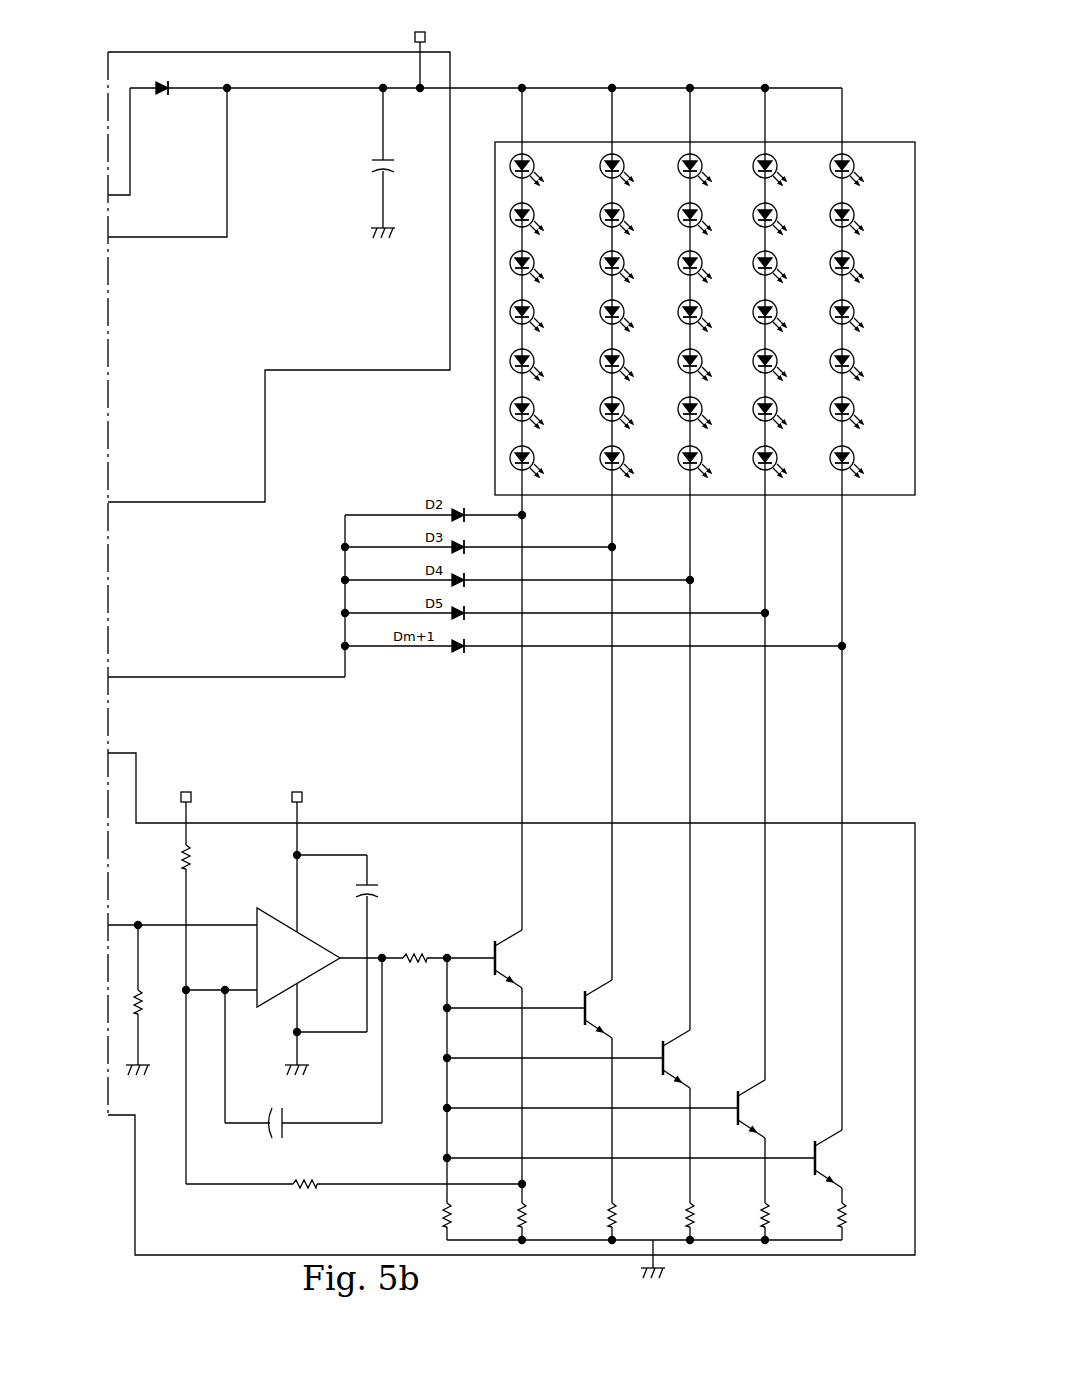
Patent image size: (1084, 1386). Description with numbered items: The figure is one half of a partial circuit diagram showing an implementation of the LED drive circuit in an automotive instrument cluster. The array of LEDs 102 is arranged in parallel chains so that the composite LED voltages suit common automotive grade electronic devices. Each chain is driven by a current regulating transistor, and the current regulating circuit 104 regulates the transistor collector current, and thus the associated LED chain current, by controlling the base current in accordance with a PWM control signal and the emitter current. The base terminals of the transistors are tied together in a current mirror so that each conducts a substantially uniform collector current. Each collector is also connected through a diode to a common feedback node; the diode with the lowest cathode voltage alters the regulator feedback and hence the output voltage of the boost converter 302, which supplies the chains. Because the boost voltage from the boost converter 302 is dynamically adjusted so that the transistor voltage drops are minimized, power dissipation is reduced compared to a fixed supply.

The boost converter 302 is at (300, 372).
The array of LEDs 102 is at (495, 405).
The current regulating circuit 104 is at (450, 823).